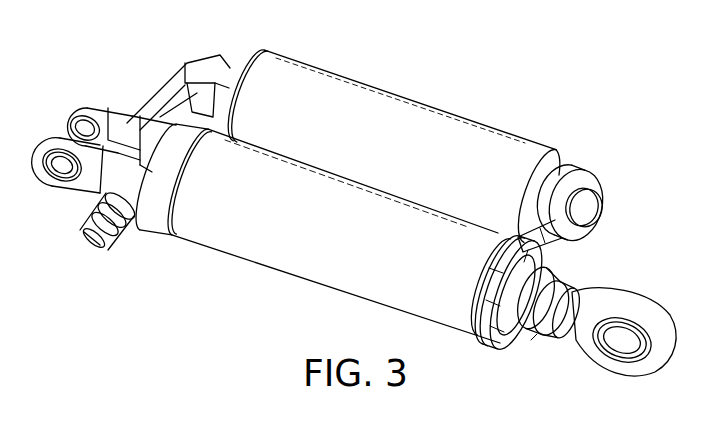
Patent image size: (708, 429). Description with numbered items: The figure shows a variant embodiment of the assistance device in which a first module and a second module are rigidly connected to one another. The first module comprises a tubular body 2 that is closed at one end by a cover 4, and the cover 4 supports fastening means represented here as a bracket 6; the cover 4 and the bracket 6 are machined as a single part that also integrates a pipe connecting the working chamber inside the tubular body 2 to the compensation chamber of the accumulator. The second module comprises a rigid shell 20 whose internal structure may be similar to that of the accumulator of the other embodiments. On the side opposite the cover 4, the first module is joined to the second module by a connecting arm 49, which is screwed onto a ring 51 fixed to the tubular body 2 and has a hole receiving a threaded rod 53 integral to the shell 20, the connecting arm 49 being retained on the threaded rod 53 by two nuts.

The tubular body 2 is at (233, 228).
The cover 4 is at (155, 222).
The bracket 6 is at (109, 112).
The rigid shell 20 is at (297, 87).
The connecting arm 49 is at (553, 223).
The ring 51 is at (503, 335).
The threaded rod 53 is at (600, 220).